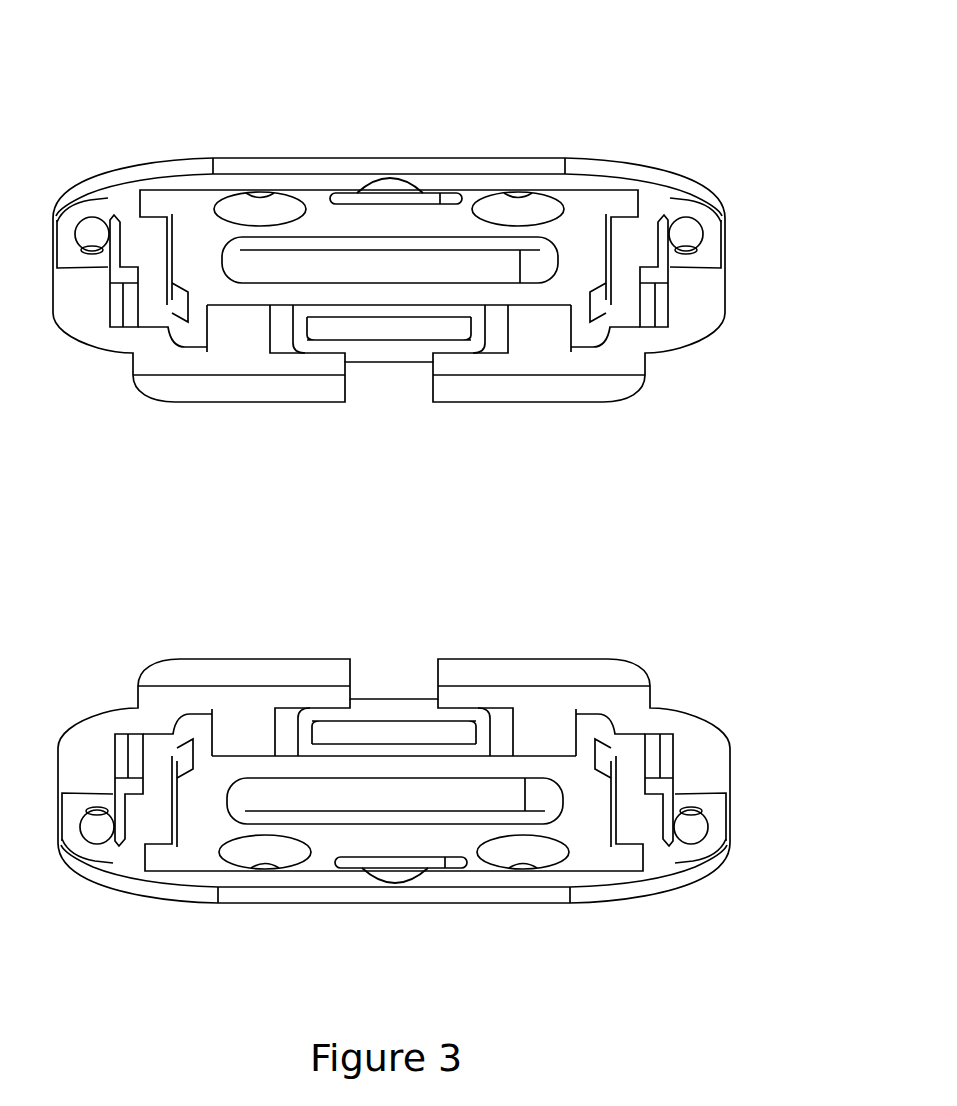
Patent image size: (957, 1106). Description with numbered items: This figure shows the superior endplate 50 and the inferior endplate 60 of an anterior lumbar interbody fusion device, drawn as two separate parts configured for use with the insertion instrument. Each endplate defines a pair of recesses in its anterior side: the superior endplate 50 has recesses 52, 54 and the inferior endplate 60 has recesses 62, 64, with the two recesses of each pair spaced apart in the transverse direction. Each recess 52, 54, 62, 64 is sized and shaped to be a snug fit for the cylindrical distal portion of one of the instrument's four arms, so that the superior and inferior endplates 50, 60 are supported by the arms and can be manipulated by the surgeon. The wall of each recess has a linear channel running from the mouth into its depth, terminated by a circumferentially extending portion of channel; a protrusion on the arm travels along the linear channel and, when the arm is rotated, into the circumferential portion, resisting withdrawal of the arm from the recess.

The superior endplate 50 is at (422, 204).
The recess 52 is at (93, 240).
The recess 54 is at (683, 235).
The inferior endplate 60 is at (406, 775).
The recess 62 is at (102, 832).
The recess 64 is at (692, 828).